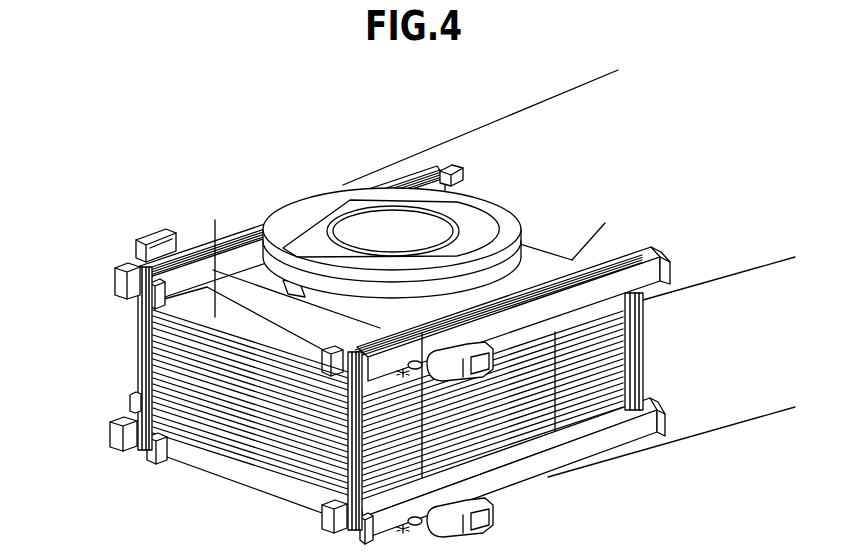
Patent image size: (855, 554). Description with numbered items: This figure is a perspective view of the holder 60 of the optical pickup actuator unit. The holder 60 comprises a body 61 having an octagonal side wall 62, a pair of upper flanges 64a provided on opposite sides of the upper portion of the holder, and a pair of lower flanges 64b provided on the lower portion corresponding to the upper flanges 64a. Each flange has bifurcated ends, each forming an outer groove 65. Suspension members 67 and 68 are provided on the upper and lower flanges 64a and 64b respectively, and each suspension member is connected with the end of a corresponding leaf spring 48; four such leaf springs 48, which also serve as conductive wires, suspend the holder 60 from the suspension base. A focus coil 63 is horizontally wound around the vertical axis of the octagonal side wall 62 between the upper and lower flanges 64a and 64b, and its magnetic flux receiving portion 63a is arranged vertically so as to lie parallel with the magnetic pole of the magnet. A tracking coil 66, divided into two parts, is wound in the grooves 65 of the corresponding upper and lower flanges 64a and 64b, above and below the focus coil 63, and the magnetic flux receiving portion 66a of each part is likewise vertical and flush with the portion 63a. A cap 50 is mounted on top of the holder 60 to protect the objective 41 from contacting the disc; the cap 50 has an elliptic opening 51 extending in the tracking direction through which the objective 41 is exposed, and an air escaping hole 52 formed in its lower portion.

The objective 41 is at (402, 228).
The leaf spring 48 is at (481, 125).
The cap 50 is at (332, 203).
The elliptic opening 51 is at (512, 230).
The air escaping hole 52 is at (286, 288).
The holder 60 is at (289, 178).
The body 61 is at (256, 236).
The octagonal side wall 62 is at (225, 283).
The focus coil 63 is at (218, 437).
The magnetic flux receiving portion of the focus coil 63a is at (267, 450).
The upper flange 64a is at (253, 263).
The lower flange 64b is at (110, 437).
The outer groove 65 is at (322, 350).
The tracking coil 66 is at (637, 252).
The magnetic flux receiving portion of the tracking coil 66a is at (138, 345).
The suspension member 67 is at (133, 401).
The suspension member 68 is at (160, 232).